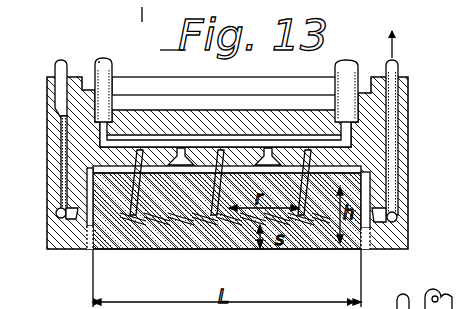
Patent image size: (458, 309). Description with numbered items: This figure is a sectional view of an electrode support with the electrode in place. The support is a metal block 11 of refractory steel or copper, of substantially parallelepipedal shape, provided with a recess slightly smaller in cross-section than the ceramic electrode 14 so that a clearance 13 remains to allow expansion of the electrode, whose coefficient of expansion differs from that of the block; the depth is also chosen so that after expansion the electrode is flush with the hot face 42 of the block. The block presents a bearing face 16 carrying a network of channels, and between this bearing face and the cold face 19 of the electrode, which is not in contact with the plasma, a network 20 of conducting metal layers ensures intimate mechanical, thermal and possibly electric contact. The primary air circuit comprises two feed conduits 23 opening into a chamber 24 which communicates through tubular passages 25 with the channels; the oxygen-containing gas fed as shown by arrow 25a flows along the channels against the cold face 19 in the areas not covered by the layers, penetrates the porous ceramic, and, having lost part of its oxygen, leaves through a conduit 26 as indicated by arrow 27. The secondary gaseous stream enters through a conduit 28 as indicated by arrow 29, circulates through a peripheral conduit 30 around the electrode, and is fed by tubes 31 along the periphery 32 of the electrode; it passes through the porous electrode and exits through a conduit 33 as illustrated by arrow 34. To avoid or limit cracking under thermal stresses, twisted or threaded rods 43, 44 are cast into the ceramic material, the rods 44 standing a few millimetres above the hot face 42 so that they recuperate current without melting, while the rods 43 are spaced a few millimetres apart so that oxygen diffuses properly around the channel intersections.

The metal block 11 is at (370, 123).
The clearance 13 is at (88, 190).
The electrode 14 is at (206, 226).
The bearing face 16 is at (254, 165).
The cold face 19 is at (227, 211).
The network of conducting metal layers 20 is at (68, 167).
The feed conduits 23 is at (114, 75).
The chamber 24 is at (224, 125).
The tubular passages 25 is at (195, 150).
The arrow 25a is at (105, 54).
The conduit 26 is at (358, 78).
The arrow 27 is at (345, 57).
The conduit 28 is at (60, 88).
The arrow 29 is at (41, 62).
The peripheral conduit 30 is at (57, 213).
The tubes 31 is at (72, 215).
The periphery 32 is at (95, 208).
The conduit 33 is at (398, 72).
The arrow 34 is at (396, 44).
The hot face 42 is at (290, 249).
The rods 43 is at (220, 188).
The rods 44 is at (195, 226).